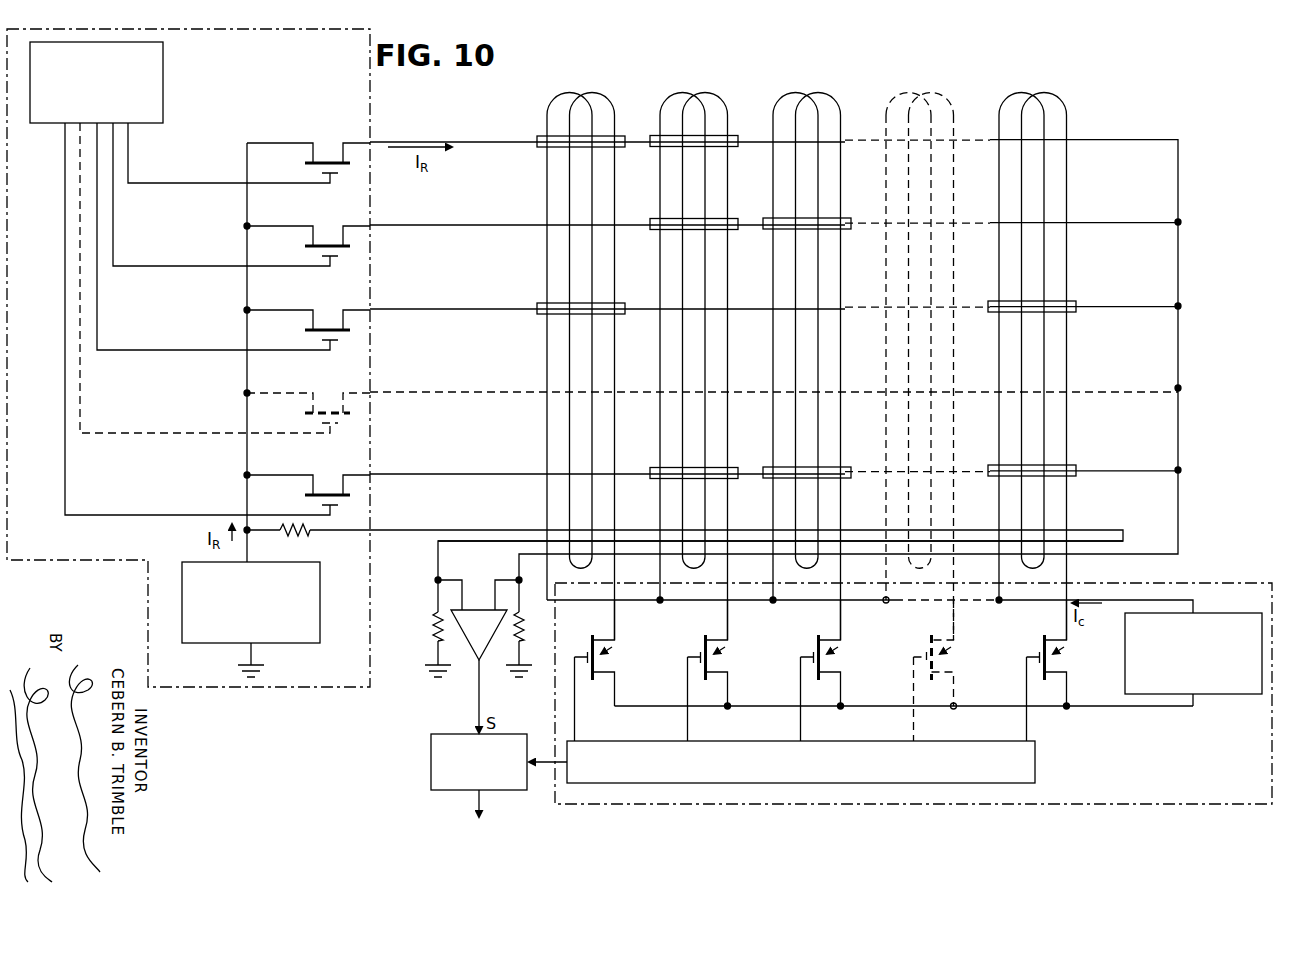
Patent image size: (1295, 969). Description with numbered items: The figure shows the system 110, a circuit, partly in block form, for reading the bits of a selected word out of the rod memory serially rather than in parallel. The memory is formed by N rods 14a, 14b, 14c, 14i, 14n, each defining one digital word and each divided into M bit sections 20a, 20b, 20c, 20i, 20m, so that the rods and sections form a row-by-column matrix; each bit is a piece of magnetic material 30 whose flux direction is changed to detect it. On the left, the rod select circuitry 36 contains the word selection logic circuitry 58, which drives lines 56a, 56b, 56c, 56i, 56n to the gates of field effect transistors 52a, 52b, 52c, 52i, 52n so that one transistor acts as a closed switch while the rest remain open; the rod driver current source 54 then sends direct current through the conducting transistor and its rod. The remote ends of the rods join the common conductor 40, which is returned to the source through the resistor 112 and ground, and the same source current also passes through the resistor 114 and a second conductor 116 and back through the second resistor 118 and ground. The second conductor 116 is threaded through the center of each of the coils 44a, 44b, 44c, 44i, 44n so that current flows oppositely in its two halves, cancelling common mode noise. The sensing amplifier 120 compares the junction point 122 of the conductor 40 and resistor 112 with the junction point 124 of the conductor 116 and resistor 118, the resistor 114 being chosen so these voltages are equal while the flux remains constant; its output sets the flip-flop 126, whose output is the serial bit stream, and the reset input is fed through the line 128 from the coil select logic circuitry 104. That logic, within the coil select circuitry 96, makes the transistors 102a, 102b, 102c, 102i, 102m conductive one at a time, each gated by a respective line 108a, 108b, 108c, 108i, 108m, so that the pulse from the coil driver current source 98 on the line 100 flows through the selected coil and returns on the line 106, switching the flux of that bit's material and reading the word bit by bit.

The system 110 is at (451, 109).
The rod select circuitry 36 is at (345, 687).
The word selection logic circuitry 58 is at (163, 62).
The line 56a is at (128, 153).
The line 56b is at (113, 246).
The line 56c is at (97, 330).
The line 56i is at (80, 413).
The line 56n is at (65, 495).
The field effect transistor 52a is at (321, 156).
The field effect transistor 52b is at (323, 239).
The field effect transistor 52c is at (325, 323).
The field effect transistor 52i is at (326, 406).
The field effect transistor 52n is at (327, 488).
The resistor 114 is at (311, 532).
The rod driver current source 54 is at (182, 578).
The rod 14a is at (1118, 137).
The rod 14b is at (1112, 220).
The rod 14c is at (1111, 304).
The rod 14i is at (1106, 385).
The rod 14n is at (1106, 468).
The section 20a is at (591, 90).
The section 20b is at (704, 90).
The section 20c is at (817, 90).
The section 20i is at (928, 90).
The section 20m is at (1047, 90).
The coil 44a is at (615, 263).
The coil 44b is at (728, 263).
The coil 44c is at (841, 263).
The coil 44i is at (954, 263).
The coil 44n is at (1067, 250).
The magnetic material 30 is at (540, 147).
The common conductor 40 is at (1160, 546).
The second conductor 116 is at (510, 541).
The junction point 124 is at (436, 577).
The junction point 122 is at (517, 577).
The second resistor 118 is at (434, 620).
The resistor 112 is at (525, 630).
The sensing amplifier 120 is at (466, 640).
The flip-flop 126 is at (431, 757).
The line 128 is at (547, 760).
The coil select circuitry 96 is at (1205, 583).
The coil select logic circuitry 104 is at (1035, 756).
The line 100 is at (1244, 593).
The coil driver current source 98 is at (1220, 695).
The line 106 is at (1133, 708).
The transistor 102a is at (616, 648).
The transistor 102b is at (729, 648).
The transistor 102c is at (842, 648).
The transistor 102i is at (955, 648).
The transistor 102m is at (1068, 648).
The coil select line 108a is at (577, 727).
The coil select line 108b is at (690, 727).
The coil select line 108c is at (803, 727).
The coil select line 108i is at (916, 727).
The coil select line 108m is at (1029, 727).